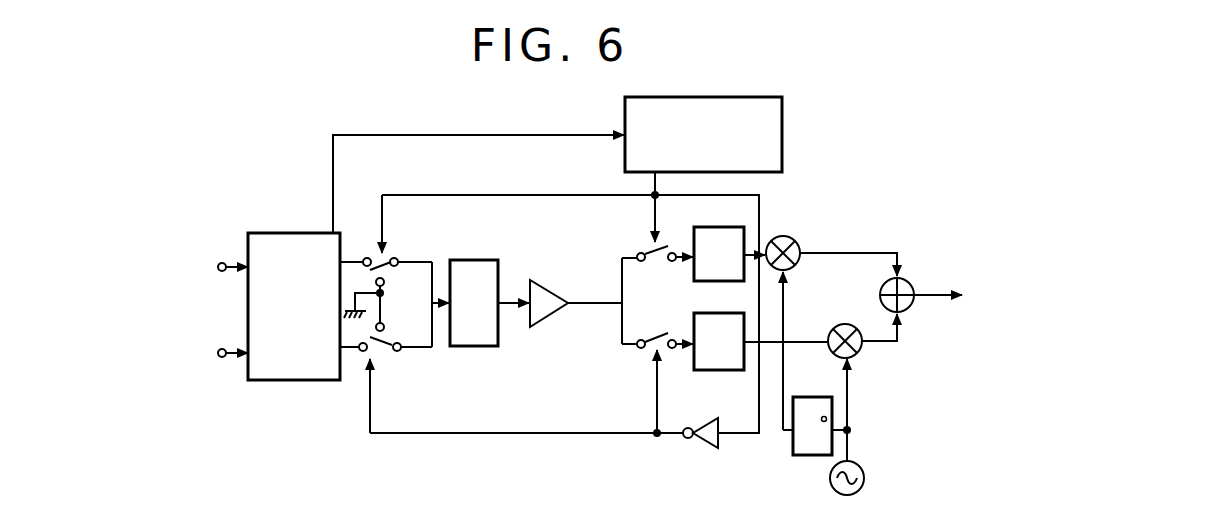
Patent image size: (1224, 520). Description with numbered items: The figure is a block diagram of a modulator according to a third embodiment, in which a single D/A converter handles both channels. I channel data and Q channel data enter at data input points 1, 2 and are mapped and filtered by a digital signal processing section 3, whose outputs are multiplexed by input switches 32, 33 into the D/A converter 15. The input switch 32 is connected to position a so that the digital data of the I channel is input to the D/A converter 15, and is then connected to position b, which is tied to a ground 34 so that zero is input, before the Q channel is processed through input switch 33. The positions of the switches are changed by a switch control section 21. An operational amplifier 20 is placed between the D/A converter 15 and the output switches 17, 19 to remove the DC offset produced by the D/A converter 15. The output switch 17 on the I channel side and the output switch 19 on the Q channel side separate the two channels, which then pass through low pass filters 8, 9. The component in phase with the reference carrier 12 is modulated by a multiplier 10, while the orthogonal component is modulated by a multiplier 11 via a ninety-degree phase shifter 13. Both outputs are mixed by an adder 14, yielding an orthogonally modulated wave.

The data input point 1 is at (220, 262).
The data input point 2 is at (220, 348).
The digital signal processing section 3 is at (290, 233).
The low pass filter 8 is at (728, 227).
The low pass filter 9 is at (725, 370).
The multiplier 10 is at (802, 242).
The multiplier 11 is at (846, 312).
The reference carrier 12 is at (865, 470).
The 90° phase shifter 13 is at (815, 397).
The adder 14 is at (906, 283).
The D/A converter 15 is at (470, 260).
The output switch 17 is at (660, 245).
The output switch 19 is at (656, 334).
The operational amplifier 20 is at (552, 291).
The switch control section 21 is at (782, 135).
The input switch 32 is at (392, 253).
The input switch 33 is at (383, 352).
The ground 34 is at (353, 320).